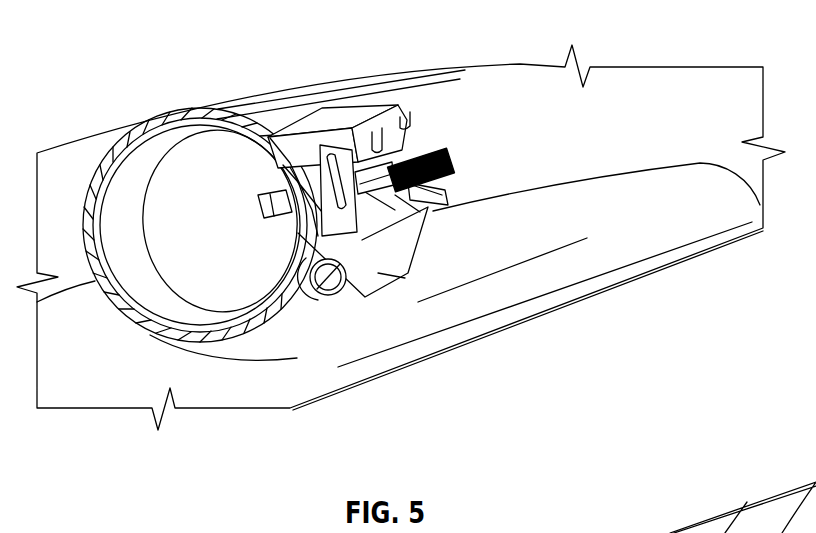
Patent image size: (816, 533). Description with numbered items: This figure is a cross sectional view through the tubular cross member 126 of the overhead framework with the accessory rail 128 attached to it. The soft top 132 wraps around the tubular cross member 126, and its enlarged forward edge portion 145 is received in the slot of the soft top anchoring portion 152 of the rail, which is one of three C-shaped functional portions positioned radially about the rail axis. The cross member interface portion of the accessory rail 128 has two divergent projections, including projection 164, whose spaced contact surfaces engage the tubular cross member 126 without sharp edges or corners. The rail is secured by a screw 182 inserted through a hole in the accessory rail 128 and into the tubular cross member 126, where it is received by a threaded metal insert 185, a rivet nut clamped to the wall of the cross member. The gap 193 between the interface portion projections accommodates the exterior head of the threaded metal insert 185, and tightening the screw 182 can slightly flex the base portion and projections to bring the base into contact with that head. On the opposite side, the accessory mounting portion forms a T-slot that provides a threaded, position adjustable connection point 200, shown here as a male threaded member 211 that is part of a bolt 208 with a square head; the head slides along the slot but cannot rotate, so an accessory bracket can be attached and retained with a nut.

The tubular cross member 126 is at (240, 122).
The accessory rail 128 is at (400, 280).
The soft top 132 is at (403, 75).
The enlarged forward edge portion 145 is at (340, 303).
The soft top anchoring portion 152 is at (337, 310).
The projection 164 is at (283, 132).
The screw 182 is at (262, 203).
The threaded metal insert 185 is at (290, 222).
The gap 193 is at (300, 258).
The connection point 200 is at (453, 160).
The bolt 208 is at (387, 175).
The male threaded member 211 is at (438, 183).